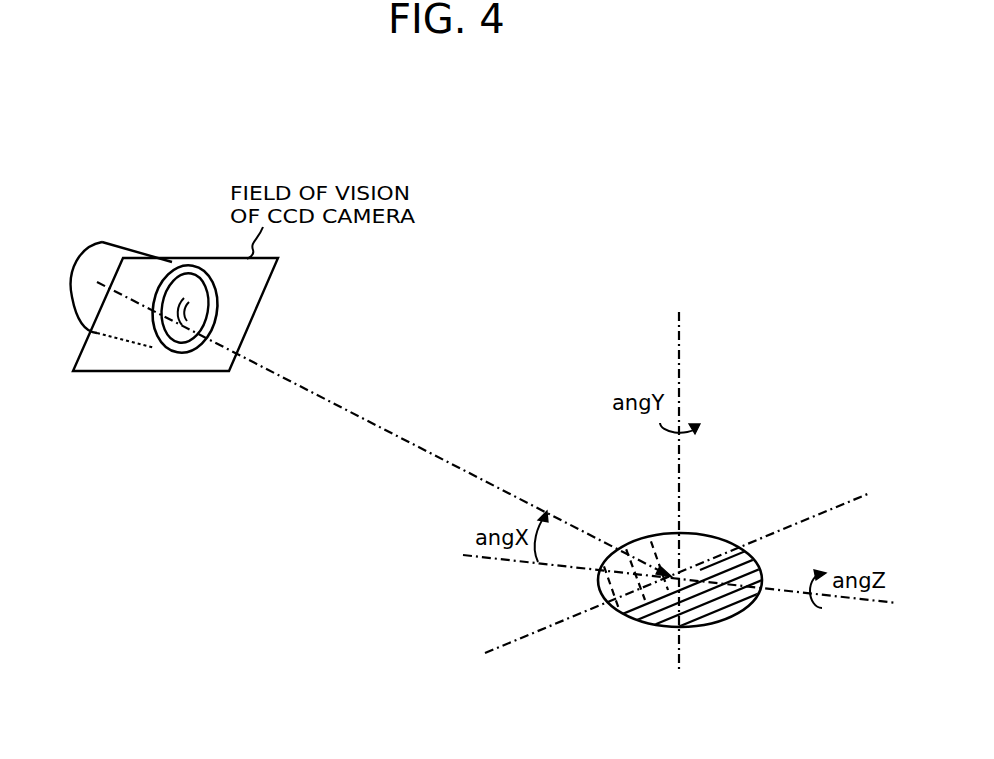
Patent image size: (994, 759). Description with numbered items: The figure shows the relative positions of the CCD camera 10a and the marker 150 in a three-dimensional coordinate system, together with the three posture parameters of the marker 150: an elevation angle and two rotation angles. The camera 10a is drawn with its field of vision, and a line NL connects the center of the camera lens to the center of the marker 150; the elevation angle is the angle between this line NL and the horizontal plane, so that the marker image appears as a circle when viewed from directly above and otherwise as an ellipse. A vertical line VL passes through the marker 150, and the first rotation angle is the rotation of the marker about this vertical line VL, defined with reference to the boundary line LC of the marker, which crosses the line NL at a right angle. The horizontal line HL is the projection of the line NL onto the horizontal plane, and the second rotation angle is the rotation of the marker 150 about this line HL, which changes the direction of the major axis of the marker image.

The CCD camera 10a is at (128, 243).
The marker 150 is at (713, 536).
The line connecting the lens center and the marker center NL is at (378, 358).
The vertical line VL is at (680, 370).
The horizontal line HL is at (516, 572).
The boundary line LC is at (643, 597).